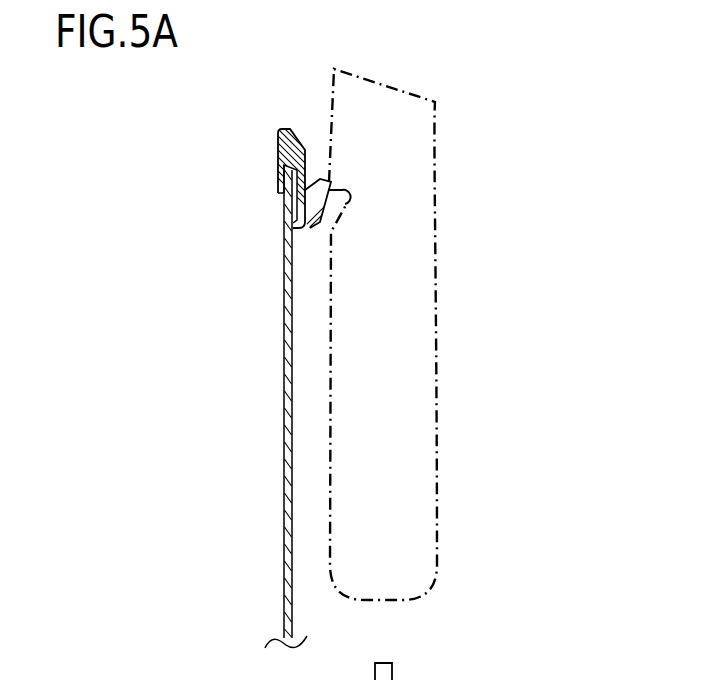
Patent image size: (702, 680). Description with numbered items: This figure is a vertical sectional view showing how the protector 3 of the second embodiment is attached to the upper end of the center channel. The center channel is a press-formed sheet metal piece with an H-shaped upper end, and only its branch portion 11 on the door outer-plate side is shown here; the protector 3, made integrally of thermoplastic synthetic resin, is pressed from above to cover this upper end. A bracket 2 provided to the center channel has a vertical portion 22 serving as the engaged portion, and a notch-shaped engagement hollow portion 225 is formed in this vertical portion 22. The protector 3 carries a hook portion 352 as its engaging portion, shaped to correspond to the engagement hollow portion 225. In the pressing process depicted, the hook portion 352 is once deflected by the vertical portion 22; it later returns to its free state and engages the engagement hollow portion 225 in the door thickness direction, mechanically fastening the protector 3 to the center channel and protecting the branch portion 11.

The bracket 2 is at (452, 334).
The vertical portion 22 is at (452, 334).
The engagement hollow portion 225 is at (350, 198).
The protector 3 is at (310, 156).
The hook portion 352 is at (320, 177).
The branch portion 11 is at (283, 368).